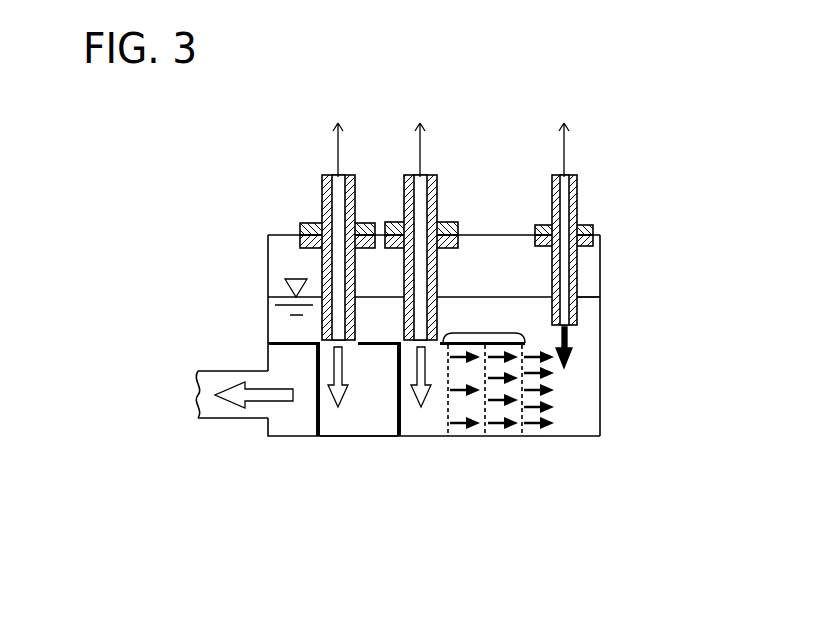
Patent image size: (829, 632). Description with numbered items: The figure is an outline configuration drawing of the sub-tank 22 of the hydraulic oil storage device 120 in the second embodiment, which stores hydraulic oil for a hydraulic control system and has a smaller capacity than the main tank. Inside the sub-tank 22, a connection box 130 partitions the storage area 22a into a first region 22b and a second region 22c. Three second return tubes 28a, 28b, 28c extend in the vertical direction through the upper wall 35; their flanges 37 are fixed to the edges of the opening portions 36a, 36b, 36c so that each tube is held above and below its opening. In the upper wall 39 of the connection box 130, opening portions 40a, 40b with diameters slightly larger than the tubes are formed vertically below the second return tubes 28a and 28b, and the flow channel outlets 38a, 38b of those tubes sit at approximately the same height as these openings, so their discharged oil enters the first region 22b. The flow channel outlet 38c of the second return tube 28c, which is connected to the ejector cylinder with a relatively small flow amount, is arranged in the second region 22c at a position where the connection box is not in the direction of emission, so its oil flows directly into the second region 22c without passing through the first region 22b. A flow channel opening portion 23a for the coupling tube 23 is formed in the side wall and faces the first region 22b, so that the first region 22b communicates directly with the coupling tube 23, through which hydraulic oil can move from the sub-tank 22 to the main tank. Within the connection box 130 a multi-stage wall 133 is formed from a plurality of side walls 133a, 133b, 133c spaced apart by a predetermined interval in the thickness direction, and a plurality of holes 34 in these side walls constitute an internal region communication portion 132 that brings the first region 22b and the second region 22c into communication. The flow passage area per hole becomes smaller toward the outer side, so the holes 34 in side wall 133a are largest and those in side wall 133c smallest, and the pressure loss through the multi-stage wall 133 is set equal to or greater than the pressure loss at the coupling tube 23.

The hydraulic oil storage device 120 is at (634, 99).
The sub-tank 22 is at (288, 436).
The storage area 22a is at (590, 312).
The first region 22b is at (370, 420).
The second region 22c is at (588, 418).
The coupling tube 23 is at (233, 419).
The flow channel opening portion 23a is at (271, 371).
The second return tube 28a is at (323, 197).
The second return tube 28b is at (405, 197).
The second return tube 28c is at (552, 197).
The holes 34 is at (452, 362).
The upper wall 35 is at (283, 236).
The opening portion 36a is at (338, 221).
The opening portion 36b is at (427, 221).
The opening portion 36c is at (580, 214).
The flange 37 is at (308, 224).
The flow channel outlet 38a is at (338, 408).
The flow channel outlet 38b is at (422, 408).
The flow channel outlet 38c is at (570, 338).
The upper wall 39 is at (383, 340).
The opening portion 40a is at (318, 348).
The opening portion 40b is at (398, 348).
The connection box 130 is at (289, 337).
The internal region communication portion 132 is at (545, 438).
The multi-stage wall 133 is at (487, 333).
The side wall 133a is at (448, 395).
The side wall 133b is at (488, 395).
The side wall 133c is at (524, 395).